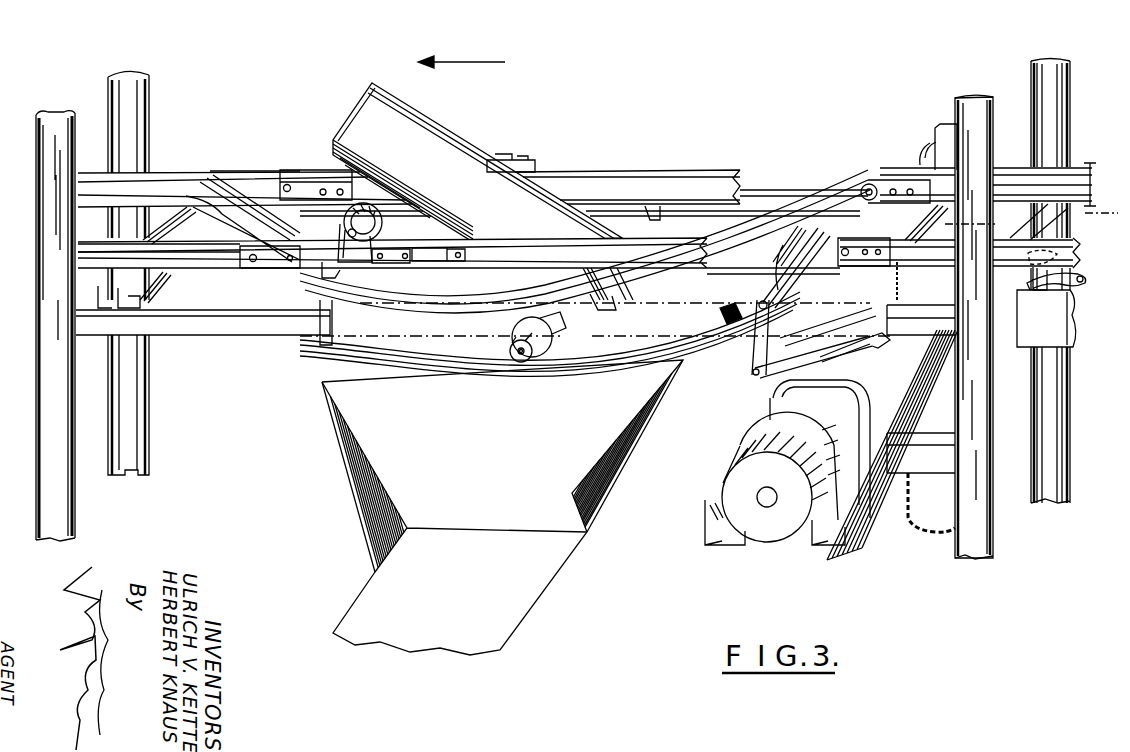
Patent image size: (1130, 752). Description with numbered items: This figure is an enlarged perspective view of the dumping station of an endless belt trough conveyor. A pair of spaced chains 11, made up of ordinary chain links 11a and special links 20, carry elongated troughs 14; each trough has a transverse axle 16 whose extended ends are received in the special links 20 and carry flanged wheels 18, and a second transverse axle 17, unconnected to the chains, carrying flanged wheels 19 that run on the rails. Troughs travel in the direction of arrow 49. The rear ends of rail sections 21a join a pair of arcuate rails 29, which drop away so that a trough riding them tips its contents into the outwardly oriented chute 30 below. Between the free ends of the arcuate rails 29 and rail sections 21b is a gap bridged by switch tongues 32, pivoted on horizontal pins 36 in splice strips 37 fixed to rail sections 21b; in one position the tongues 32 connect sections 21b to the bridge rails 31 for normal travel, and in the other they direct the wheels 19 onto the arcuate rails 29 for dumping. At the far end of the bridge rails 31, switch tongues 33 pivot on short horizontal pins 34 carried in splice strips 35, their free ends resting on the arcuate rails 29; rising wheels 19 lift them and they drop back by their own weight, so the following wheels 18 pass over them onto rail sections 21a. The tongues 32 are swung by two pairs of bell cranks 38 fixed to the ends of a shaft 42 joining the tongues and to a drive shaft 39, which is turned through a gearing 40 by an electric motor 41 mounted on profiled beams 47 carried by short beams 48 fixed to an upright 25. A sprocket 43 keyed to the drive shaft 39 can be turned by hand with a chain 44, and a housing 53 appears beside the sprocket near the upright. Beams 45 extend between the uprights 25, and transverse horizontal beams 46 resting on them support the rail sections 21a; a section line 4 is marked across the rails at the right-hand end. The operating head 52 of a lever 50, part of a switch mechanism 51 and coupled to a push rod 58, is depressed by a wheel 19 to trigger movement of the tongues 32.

The section line 4 is at (1093, 201).
The chain 11 is at (497, 153).
The chain link 11a is at (520, 152).
The trough 14 is at (418, 128).
The transverse axle 16 is at (347, 238).
The transverse axle 17 is at (523, 362).
The flanged wheel 18 is at (381, 226).
The flanged wheel 19 is at (552, 339).
The special chain link 20 is at (343, 240).
The rail section 21a is at (110, 218).
The rail section 21b is at (885, 242).
The upright 25 is at (65, 480).
The arcuate rail 29 is at (450, 305).
The chute 30 is at (572, 552).
The bridge rail 31 is at (600, 175).
The switch tongue 32 is at (835, 212).
The switch tongue 33 is at (242, 178).
The horizontal pin 34 is at (252, 262).
The splice strip 35 is at (302, 187).
The horizontal pin 36 is at (859, 188).
The splice strip 37 is at (878, 188).
The bell crank 38 is at (847, 278).
The drive shaft 39 is at (858, 370).
The gearing 40 is at (773, 398).
The electric motor 41 is at (722, 470).
The shaft 42 is at (773, 242).
The sprocket 43 is at (922, 157).
The chain 44 is at (905, 513).
The beam 45 is at (215, 330).
The transverse horizontal beam 46 is at (148, 292).
The profiled beam 47 is at (835, 553).
The short beam 48 is at (923, 438).
The arrow 49 is at (448, 63).
The lever 50 is at (1082, 290).
The switch mechanism 51 is at (1070, 323).
The operating head 52 is at (1078, 252).
The housing 53 is at (943, 130).
The push rod 58 is at (1046, 318).